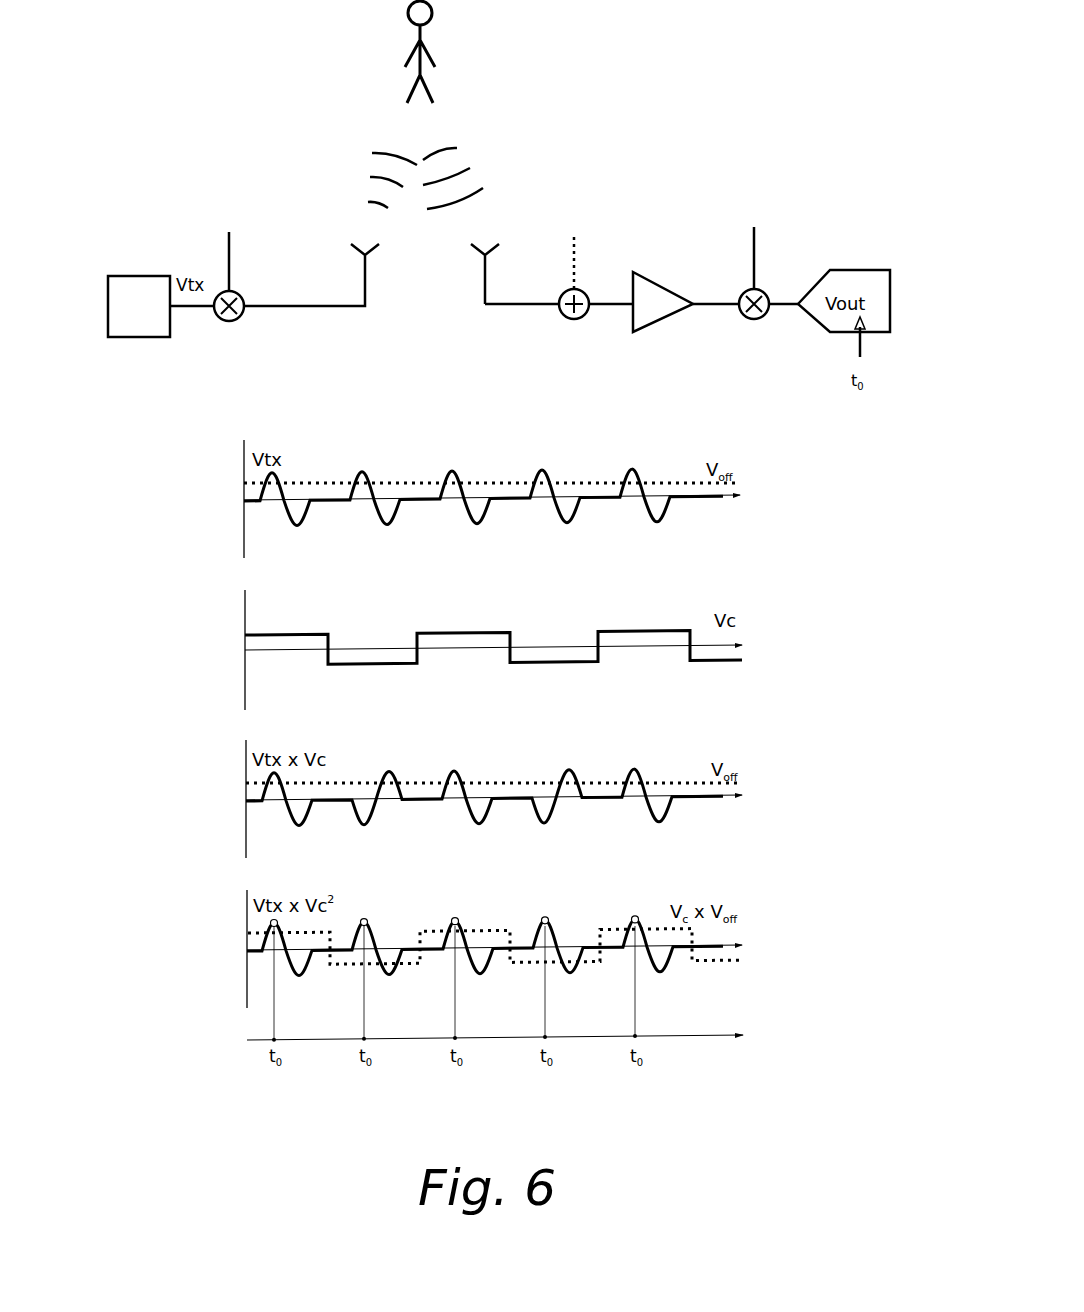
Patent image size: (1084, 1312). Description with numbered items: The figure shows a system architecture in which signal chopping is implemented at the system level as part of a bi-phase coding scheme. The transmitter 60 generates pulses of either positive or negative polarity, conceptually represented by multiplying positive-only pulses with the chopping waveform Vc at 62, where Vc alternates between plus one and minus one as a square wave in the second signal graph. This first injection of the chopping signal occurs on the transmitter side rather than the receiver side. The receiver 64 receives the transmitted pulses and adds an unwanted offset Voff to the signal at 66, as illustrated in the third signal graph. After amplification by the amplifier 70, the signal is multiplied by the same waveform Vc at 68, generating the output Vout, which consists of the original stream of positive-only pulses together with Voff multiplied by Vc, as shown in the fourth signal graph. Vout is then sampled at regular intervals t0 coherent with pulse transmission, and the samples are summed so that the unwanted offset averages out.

The transmitter 60 is at (153, 330).
The multiplication with waveform Vc 62 is at (233, 320).
The receiver 64 is at (688, 117).
The offset addition 66 is at (574, 318).
The multiplication with waveform Vc 68 is at (763, 320).
The amplifier 70 is at (660, 290).